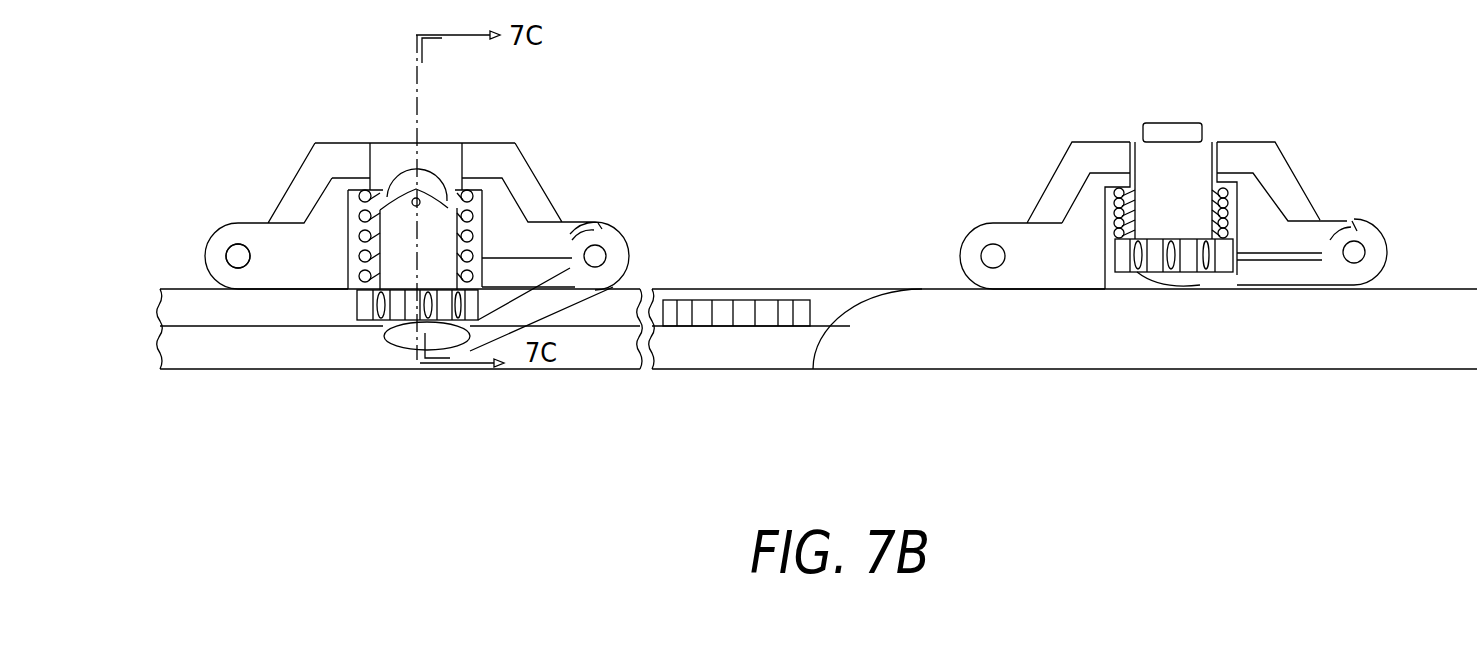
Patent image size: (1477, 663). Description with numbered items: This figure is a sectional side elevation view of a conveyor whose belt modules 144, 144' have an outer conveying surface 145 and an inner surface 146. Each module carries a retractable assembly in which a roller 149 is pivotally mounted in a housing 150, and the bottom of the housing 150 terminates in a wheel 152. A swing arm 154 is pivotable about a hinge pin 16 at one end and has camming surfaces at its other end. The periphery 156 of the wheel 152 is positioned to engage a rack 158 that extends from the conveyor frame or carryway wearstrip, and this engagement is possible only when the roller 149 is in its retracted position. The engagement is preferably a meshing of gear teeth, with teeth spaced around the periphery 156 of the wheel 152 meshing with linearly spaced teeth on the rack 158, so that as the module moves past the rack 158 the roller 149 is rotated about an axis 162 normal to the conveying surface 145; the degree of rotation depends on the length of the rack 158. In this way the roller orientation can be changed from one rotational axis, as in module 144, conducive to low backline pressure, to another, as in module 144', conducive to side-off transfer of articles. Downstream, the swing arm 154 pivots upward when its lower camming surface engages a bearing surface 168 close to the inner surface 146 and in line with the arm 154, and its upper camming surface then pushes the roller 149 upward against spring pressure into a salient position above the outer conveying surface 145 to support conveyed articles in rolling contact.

The outer conveying surface 145 is at (345, 142).
The roller 149 is at (405, 182).
The axis 162 is at (417, 118).
The housing 150 is at (437, 225).
The belt module 144 is at (561, 216).
The hinge pin 16 is at (598, 254).
The inner surface 146 is at (250, 292).
The wheel 152 is at (370, 327).
The periphery 156 is at (458, 322).
The swing arm 154 is at (548, 303).
The rack 158 is at (757, 307).
The bearing surface 168 is at (925, 290).
The belt module 144' is at (1173, 186).